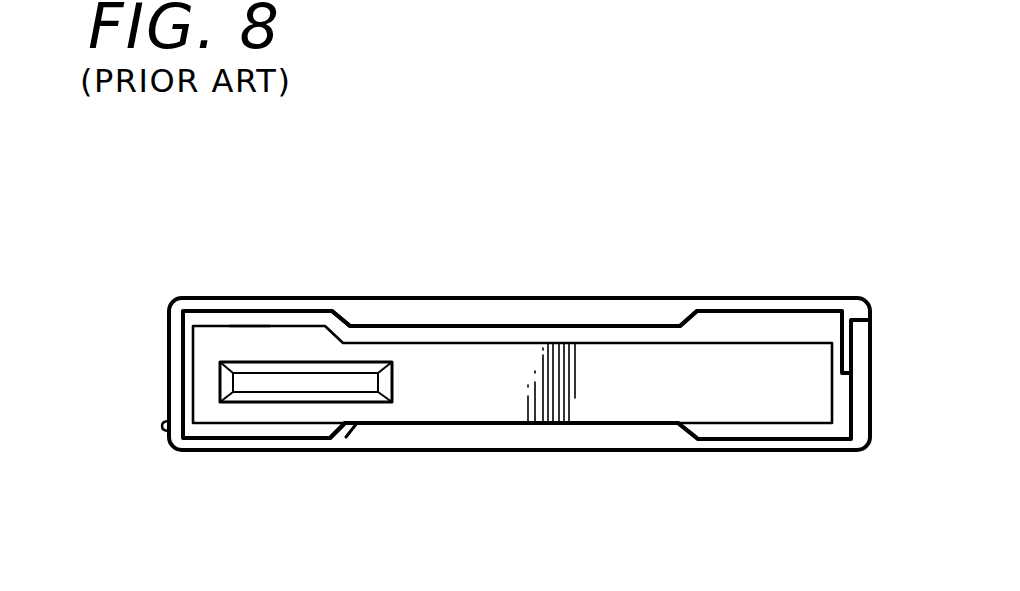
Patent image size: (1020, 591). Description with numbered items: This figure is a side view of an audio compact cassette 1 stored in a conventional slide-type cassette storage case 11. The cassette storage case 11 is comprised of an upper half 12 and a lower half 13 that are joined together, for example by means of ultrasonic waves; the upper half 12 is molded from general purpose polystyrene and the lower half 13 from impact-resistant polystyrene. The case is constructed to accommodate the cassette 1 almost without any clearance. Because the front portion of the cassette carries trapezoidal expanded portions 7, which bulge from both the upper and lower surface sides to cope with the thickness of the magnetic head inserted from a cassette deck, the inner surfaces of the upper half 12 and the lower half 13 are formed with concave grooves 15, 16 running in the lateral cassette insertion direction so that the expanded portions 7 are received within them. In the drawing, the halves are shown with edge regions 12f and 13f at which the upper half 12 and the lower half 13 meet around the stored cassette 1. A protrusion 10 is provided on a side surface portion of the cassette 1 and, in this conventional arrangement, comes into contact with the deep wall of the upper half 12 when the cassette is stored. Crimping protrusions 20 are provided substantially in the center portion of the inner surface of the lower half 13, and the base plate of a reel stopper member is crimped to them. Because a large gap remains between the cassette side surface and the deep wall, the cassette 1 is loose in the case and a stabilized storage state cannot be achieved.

The audio compact cassette 1 is at (635, 398).
The trapezoidal expanded portions 7 is at (247, 338).
The protrusion 10 is at (366, 380).
The cassette storage case 11 is at (852, 288).
The upper half 12 is at (555, 297).
The flange of upper case 12f is at (437, 328).
The lower half 13 is at (555, 453).
The flange of lower case 13f is at (433, 421).
The concave groove 15 is at (290, 310).
The concave groove 16 is at (288, 437).
The crimping protrusions 20 is at (162, 426).